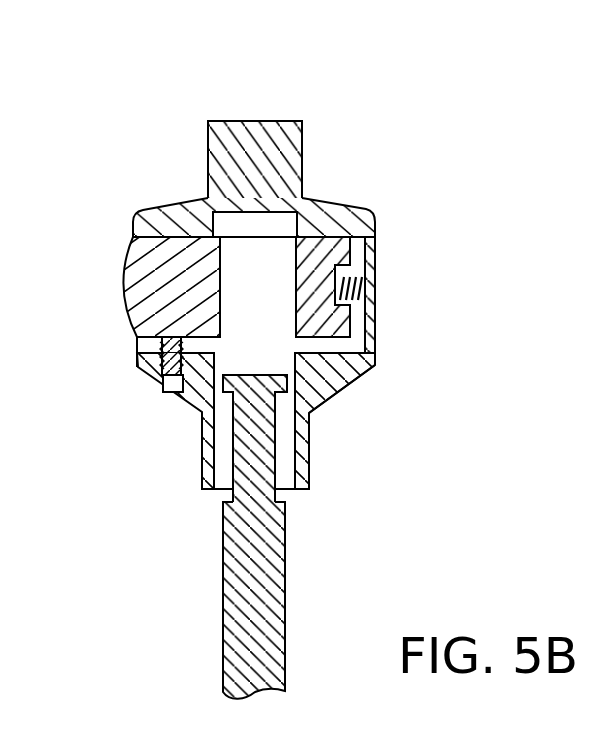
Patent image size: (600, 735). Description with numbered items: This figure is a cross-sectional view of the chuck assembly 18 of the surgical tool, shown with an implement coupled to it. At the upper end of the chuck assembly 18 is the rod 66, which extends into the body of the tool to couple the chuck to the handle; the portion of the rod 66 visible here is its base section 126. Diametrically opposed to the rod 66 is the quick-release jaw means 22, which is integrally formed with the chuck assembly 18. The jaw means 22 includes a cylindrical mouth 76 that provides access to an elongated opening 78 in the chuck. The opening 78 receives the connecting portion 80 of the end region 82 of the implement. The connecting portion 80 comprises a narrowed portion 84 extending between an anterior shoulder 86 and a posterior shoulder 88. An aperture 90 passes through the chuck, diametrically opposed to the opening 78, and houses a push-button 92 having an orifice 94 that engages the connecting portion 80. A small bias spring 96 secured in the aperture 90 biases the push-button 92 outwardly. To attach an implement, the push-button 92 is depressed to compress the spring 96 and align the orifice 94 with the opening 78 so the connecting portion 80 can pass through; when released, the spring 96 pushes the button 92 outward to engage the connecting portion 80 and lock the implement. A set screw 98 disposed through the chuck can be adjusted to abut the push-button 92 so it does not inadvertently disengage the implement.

The rod 66 is at (170, 185).
The base section 126 is at (283, 148).
The orifice 94 is at (272, 262).
The push-button 92 is at (129, 268).
The bias spring 96 is at (362, 285).
The chuck assembly 18 is at (445, 311).
The set screw 98 is at (158, 363).
The aperture 90 is at (352, 346).
The posterior shoulder 88 is at (309, 413).
The quick-release jaw means 22 is at (192, 437).
The elongated opening 78 is at (283, 437).
The connecting portion 80 is at (230, 465).
The narrowed portion 84 is at (276, 472).
The anterior shoulder 86 is at (222, 499).
The cylindrical mouth 76 is at (286, 492).
The end region 82 is at (222, 537).